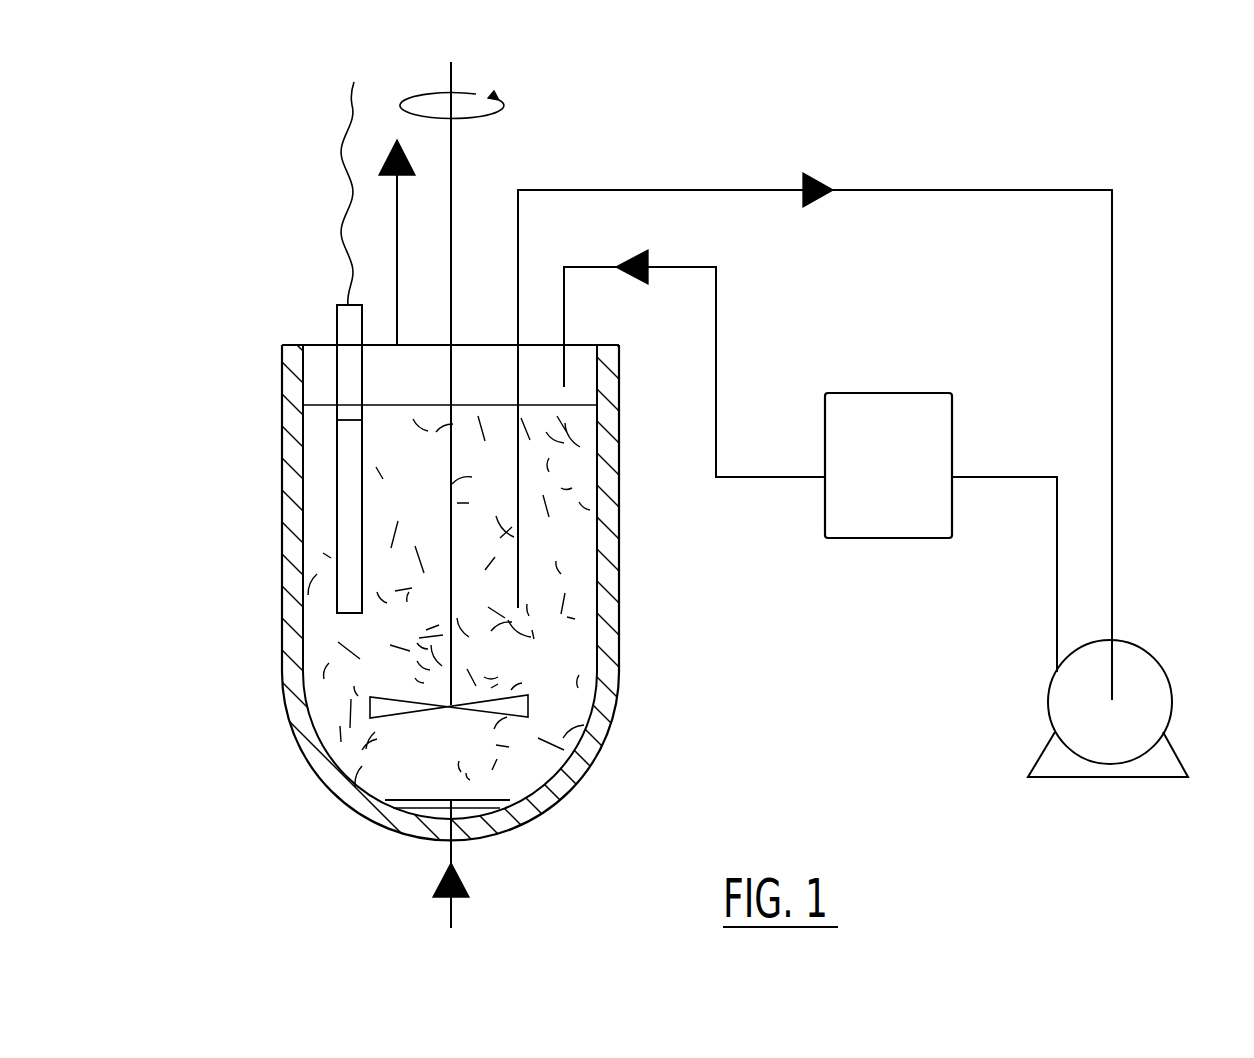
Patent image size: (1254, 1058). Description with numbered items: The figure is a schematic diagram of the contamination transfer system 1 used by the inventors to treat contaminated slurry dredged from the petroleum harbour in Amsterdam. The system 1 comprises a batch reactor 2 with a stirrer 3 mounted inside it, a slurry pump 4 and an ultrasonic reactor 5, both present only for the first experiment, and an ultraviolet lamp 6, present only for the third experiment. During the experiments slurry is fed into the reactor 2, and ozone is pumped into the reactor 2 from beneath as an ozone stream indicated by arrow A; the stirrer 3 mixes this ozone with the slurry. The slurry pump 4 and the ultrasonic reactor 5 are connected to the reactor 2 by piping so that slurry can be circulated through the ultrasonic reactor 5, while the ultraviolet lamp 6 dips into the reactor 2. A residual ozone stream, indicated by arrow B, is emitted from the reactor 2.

The contamination transfer system 1 is at (257, 347).
The batch reactor 2 is at (292, 677).
The stirrer 3 is at (526, 706).
The slurry pump 4 is at (1160, 685).
The ultrasonic reactor 5 is at (888, 465).
The ultraviolet lamp 6 is at (348, 545).